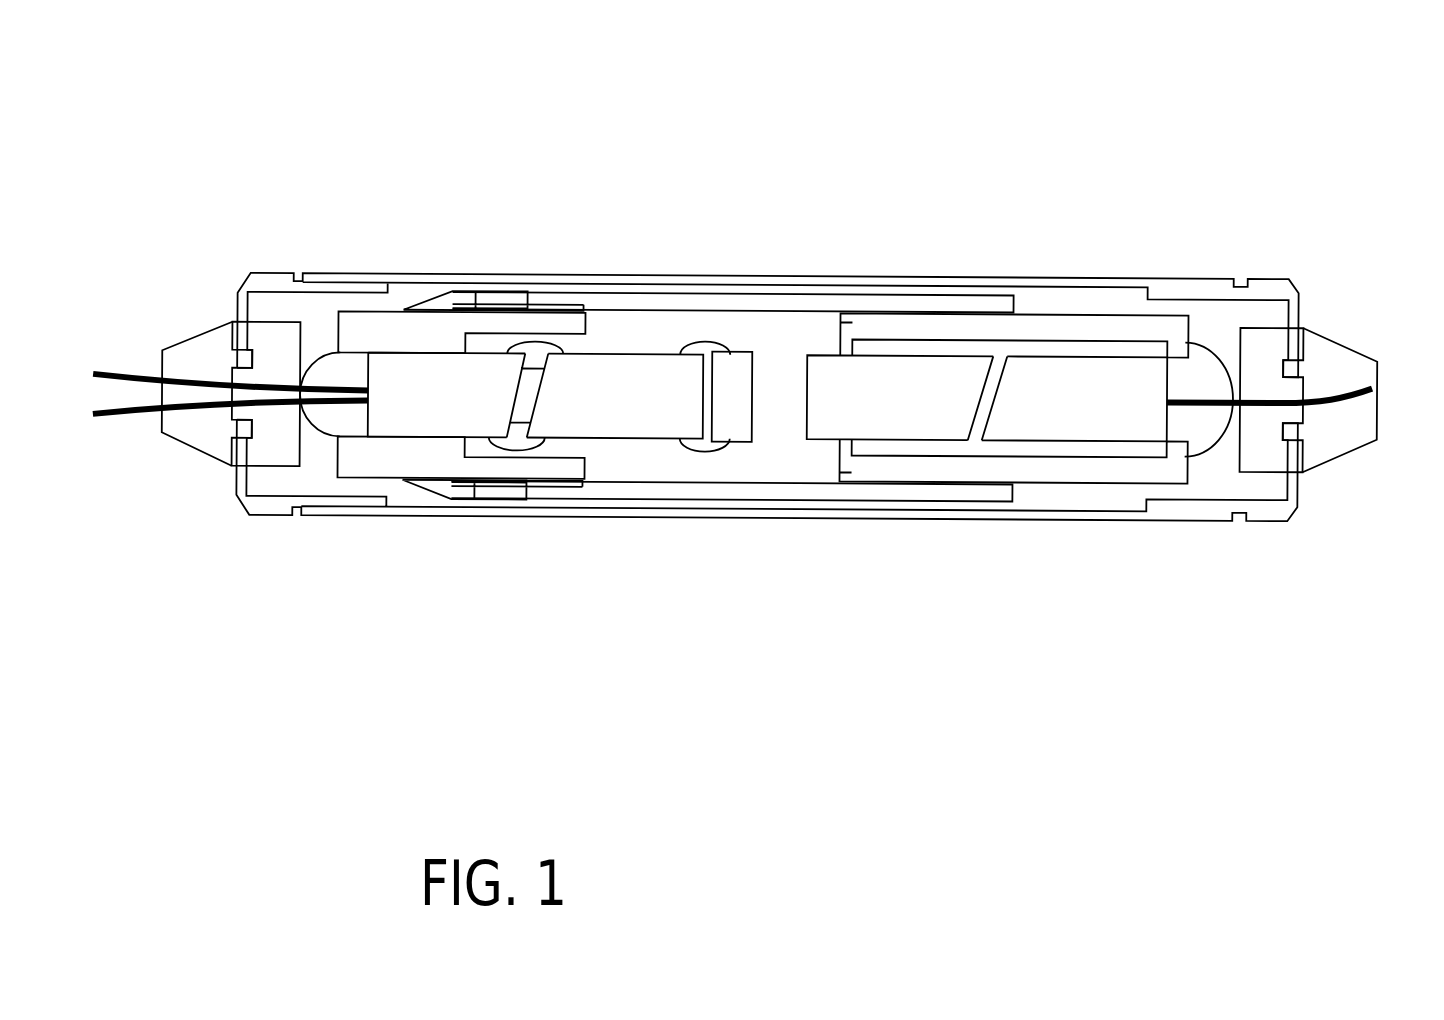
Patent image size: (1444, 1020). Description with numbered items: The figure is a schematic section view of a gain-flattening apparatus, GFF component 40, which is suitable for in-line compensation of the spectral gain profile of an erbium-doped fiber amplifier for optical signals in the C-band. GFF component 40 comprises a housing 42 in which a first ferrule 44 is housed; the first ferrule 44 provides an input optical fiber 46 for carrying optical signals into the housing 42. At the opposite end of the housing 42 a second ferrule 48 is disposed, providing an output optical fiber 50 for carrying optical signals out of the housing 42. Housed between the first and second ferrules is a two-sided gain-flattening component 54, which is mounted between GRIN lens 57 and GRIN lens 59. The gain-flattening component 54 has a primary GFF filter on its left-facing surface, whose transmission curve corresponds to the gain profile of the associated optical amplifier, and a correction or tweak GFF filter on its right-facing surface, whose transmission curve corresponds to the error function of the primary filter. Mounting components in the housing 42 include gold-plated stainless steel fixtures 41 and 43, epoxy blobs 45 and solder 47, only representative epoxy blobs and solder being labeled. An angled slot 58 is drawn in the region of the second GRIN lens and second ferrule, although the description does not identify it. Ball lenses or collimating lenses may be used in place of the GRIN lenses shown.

The GFF component 40 is at (362, 183).
The gold-plated stainless steel fixture 41 is at (383, 457).
The housing 42 is at (1182, 300).
The gold-plated stainless steel fixture 43 is at (867, 487).
The first ferrule 44 is at (424, 395).
The epoxy blobs 45 is at (705, 330).
The input optical fiber 46 is at (127, 373).
The solder 47 is at (531, 297).
The second ferrule 48 is at (1108, 399).
The output optical fiber 50 is at (1330, 393).
The 2-sided gain-flattening component 54 is at (733, 398).
The GRIN lens 57 is at (596, 396).
The angled slot 58 is at (987, 402).
The GRIN lens 59 is at (900, 397).